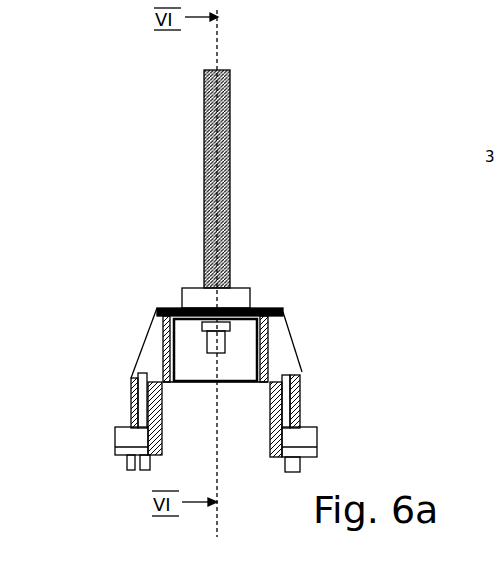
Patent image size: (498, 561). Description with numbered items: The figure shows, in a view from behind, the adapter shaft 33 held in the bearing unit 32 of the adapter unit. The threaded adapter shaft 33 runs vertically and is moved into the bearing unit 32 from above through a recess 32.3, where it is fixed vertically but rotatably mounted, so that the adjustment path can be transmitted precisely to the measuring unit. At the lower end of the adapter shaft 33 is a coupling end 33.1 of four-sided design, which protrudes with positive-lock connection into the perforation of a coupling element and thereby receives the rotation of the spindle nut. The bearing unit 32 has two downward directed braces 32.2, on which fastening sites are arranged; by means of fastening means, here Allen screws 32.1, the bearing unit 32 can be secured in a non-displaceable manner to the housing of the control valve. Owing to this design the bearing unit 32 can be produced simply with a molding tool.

The adapter shaft 33 is at (230, 122).
The recess 32.3 is at (247, 288).
The bearing unit 32 is at (280, 343).
The coupling end 33.1 is at (210, 343).
The braces 32.2 is at (133, 394).
The Allen screws 32.1 is at (305, 420).